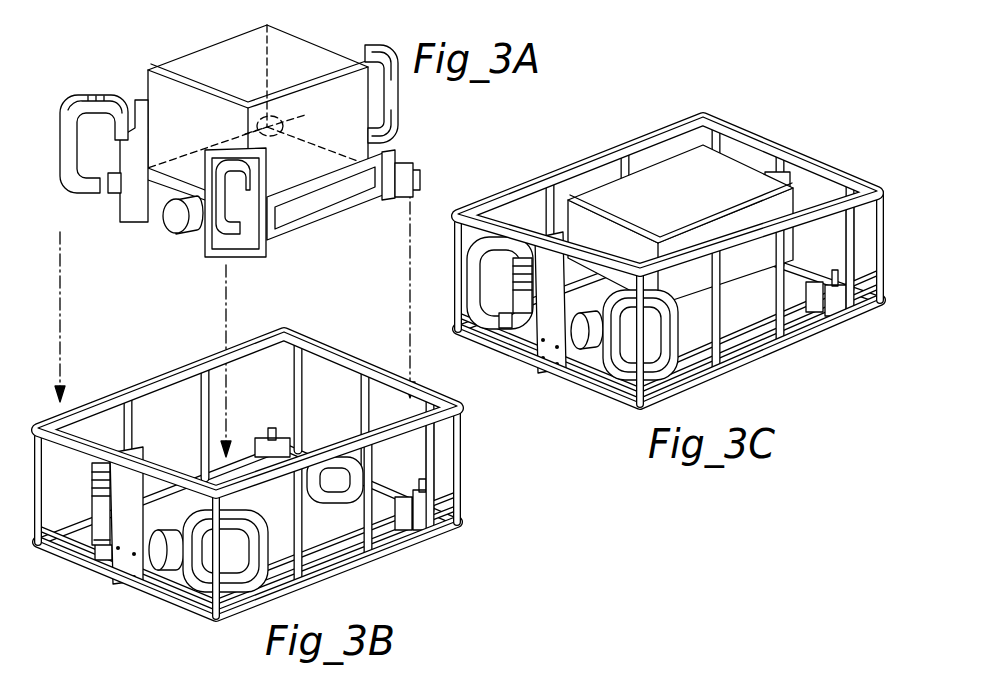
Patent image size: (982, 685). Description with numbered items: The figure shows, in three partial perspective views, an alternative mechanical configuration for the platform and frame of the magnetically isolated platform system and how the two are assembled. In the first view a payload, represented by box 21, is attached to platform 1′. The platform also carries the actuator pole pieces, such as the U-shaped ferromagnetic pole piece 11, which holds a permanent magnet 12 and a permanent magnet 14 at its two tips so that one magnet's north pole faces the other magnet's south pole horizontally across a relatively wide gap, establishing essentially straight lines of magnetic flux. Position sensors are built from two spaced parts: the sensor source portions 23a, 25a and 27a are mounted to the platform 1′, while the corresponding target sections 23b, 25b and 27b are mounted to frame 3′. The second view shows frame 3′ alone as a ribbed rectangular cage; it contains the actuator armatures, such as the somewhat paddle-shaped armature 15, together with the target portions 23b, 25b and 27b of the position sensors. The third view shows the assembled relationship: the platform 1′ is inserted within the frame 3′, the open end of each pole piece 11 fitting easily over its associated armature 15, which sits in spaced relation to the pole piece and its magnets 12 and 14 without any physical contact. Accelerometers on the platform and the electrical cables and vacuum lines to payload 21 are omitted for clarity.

In FIG. 3A, the platform 1′ is at (327, 220).
In FIG. 3C, the platform 1′ is at (745, 343).
In FIG. 3B, the frame 3′ is at (172, 378).
In FIG. 3C, the frame 3′ is at (592, 170).
In FIG. 3A, the pole piece 11 is at (68, 100).
In FIG. 3C, the pole piece 11 is at (468, 258).
In FIG. 3A, the permanent magnet 12 is at (112, 172).
In FIG. 3A, the permanent magnet 14 is at (96, 194).
In FIG. 3B, the actuator armature 15 is at (93, 488).
In FIG. 3C, the actuator armature 15 is at (503, 333).
In FIG. 3A, the payload 21 is at (251, 77).
In FIG. 3C, the payload 21 is at (685, 199).
In FIG. 3A, the position sensor source portion 23a is at (290, 128).
In FIG. 3B, the position sensor target section 23b is at (293, 428).
In FIG. 3A, the position sensor source portion 25a is at (420, 178).
In FIG. 3C, the position sensor source portion 25a is at (805, 296).
In FIG. 3B, the position sensor target section 25b is at (407, 532).
In FIG. 3C, the position sensor target section 25b is at (836, 318).
In FIG. 3A, the position sensor source portion 27a is at (176, 234).
In FIG. 3B, the position sensor target section 27b is at (165, 575).